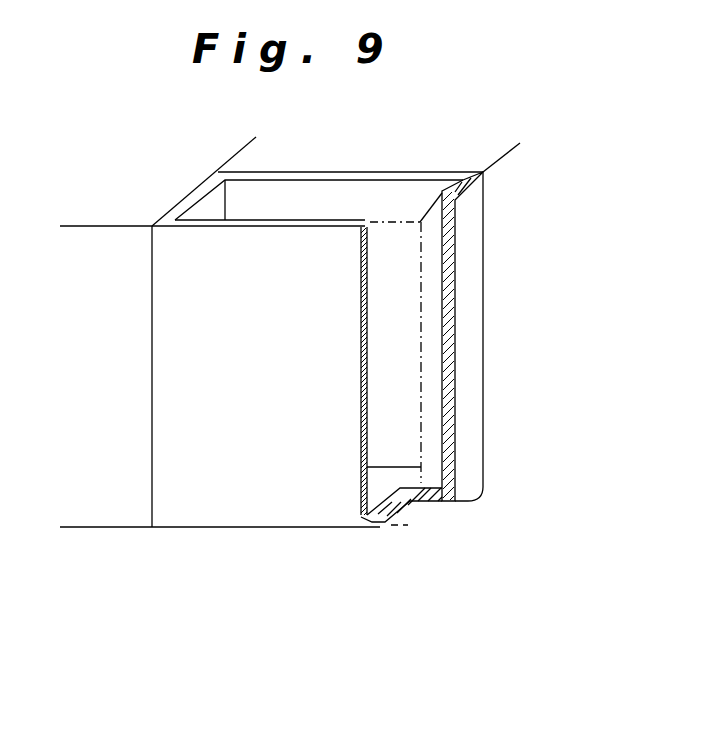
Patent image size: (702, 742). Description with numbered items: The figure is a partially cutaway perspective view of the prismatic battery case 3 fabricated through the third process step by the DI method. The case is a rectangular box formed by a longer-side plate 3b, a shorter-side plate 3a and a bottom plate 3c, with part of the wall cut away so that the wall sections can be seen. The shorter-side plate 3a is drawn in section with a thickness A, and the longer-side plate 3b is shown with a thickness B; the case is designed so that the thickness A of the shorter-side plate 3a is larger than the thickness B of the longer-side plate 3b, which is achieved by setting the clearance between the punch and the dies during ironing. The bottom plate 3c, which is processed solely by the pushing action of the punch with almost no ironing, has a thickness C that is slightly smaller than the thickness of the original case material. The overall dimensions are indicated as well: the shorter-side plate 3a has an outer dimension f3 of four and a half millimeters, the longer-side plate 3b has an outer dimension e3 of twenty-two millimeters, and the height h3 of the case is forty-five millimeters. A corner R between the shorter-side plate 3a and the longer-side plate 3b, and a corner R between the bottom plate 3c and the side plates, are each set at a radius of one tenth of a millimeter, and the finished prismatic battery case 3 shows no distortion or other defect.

The prismatic battery case 3 is at (490, 378).
The shorter-side plate 3a is at (467, 313).
The longer-side plate 3b is at (221, 483).
The bottom plate 3c is at (381, 487).
The thickness of the shorter-side plate A is at (410, 238).
The thickness of the longer-side plate B is at (390, 288).
The thickness of the bottom plate C is at (438, 465).
The corner R is at (165, 476).
The outer dimension of the longer-side plate e3 is at (507, 152).
The outer dimension of the shorter-side plate f3 is at (218, 172).
The height h3 is at (108, 227).